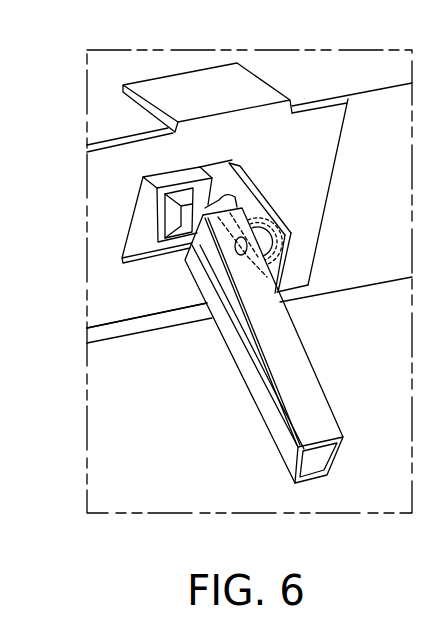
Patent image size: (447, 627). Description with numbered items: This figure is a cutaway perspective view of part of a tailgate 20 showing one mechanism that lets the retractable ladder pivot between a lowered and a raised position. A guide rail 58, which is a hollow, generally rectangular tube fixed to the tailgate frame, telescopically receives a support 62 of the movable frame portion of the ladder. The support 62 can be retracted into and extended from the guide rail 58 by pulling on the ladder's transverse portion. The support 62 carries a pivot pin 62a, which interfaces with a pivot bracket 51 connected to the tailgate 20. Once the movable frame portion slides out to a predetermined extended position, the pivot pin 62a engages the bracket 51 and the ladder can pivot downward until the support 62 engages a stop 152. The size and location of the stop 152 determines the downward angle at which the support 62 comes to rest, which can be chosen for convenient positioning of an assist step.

The tailgate 20 is at (338, 67).
The pivot bracket 51 is at (272, 205).
The guide rail 58 is at (147, 213).
The support 62 is at (308, 383).
The pivot pin 62a is at (292, 230).
The stop 152 is at (152, 304).